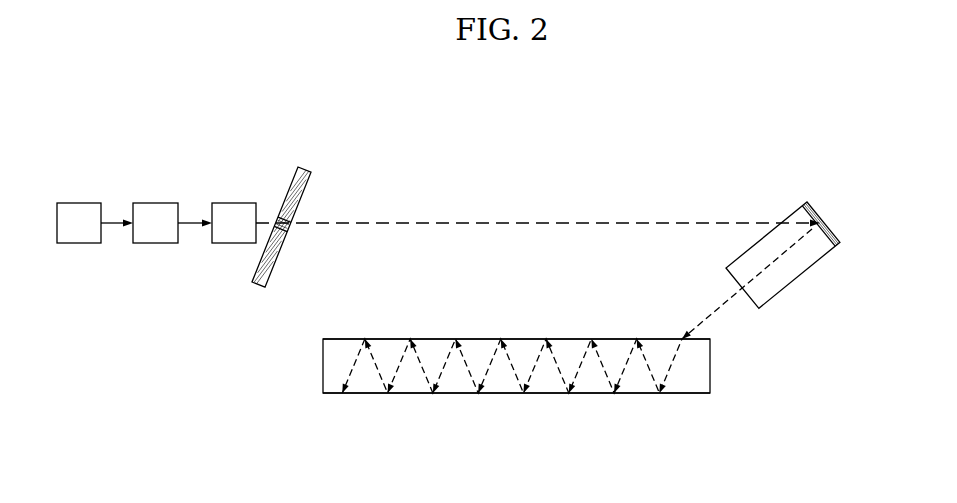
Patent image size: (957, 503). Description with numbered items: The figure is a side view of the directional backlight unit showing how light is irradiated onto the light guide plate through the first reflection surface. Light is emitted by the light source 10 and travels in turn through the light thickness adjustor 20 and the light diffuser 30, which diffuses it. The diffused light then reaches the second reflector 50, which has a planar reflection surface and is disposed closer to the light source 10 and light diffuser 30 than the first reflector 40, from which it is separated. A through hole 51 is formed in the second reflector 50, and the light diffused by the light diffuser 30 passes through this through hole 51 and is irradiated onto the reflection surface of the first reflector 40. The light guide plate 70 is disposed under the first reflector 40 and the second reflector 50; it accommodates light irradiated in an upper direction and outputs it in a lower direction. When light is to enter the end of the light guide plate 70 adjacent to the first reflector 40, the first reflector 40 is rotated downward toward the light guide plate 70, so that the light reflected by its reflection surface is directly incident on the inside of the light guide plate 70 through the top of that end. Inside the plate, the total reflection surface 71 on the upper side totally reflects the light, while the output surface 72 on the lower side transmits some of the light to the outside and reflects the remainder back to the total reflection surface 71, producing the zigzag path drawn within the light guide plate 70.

The light source 10 is at (78, 207).
The light thickness adjustor 20 is at (158, 207).
The light diffuser 30 is at (235, 207).
The first reflector 40 is at (812, 198).
The second reflector 50 is at (299, 165).
The through hole 51 is at (293, 220).
The light guide plate 70 is at (703, 368).
The total reflection surface 71 is at (523, 337).
The output surface 72 is at (498, 395).